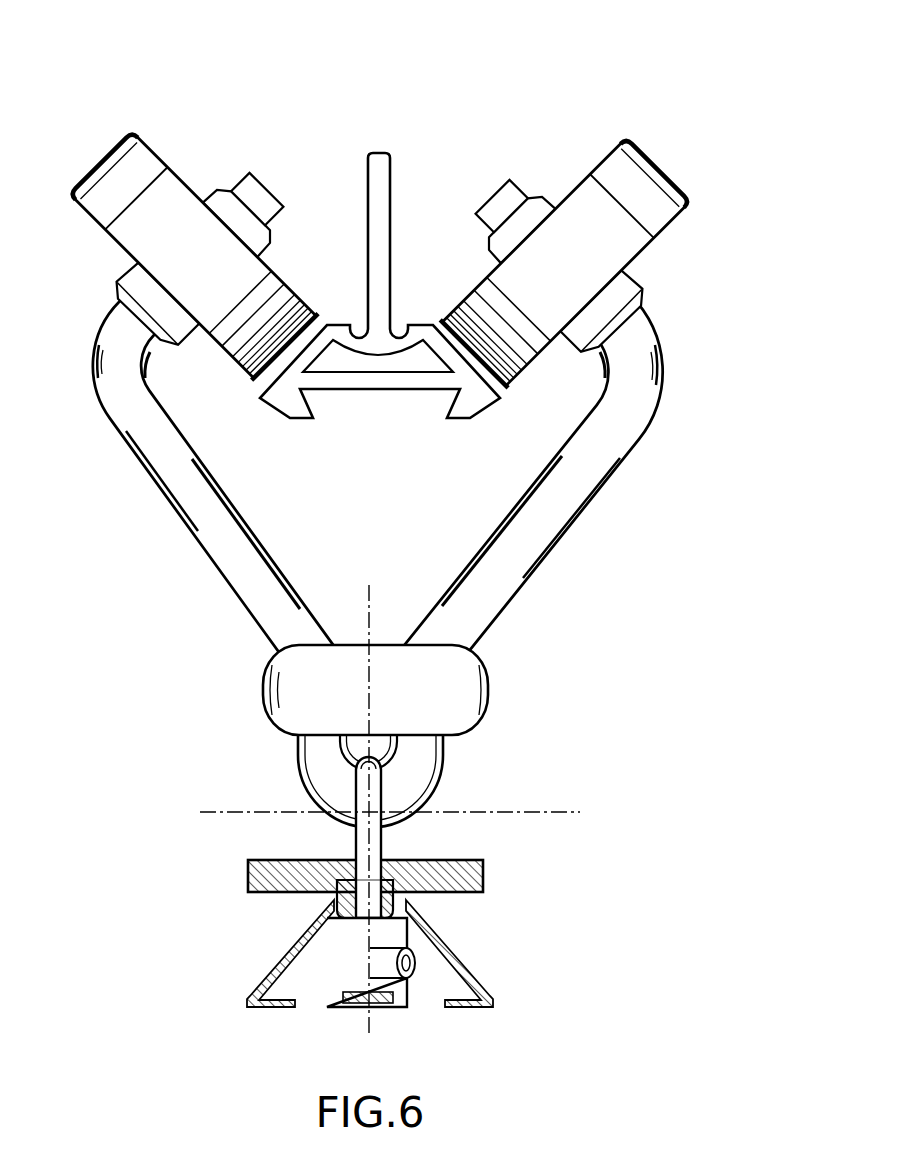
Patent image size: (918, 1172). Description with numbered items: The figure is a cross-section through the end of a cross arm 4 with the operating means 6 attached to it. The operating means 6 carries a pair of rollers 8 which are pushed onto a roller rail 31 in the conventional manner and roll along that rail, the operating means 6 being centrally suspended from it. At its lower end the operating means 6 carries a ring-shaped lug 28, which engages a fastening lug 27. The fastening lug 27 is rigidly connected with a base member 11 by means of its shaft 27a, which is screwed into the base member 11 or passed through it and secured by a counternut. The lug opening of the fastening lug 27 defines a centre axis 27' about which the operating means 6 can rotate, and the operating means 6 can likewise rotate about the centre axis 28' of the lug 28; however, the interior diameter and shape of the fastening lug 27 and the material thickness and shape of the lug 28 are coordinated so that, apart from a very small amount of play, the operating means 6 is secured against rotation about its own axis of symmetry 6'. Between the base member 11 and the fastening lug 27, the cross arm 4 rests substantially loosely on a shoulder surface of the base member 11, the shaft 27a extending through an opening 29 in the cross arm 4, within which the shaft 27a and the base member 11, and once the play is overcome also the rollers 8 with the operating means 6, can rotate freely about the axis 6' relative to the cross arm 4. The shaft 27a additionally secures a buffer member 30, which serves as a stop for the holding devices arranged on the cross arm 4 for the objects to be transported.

The cross arm 4 is at (430, 955).
The operating means 6 is at (422, 489).
The axis of symmetry 6' is at (425, 747).
The roller 8 is at (168, 198).
The base member 11 is at (347, 966).
The fastening lug 27 is at (491, 837).
The centre axis 27' is at (378, 767).
The shaft 27a is at (338, 905).
The lug 28 is at (461, 776).
The centre axis 28' is at (454, 697).
The opening 29 is at (395, 903).
The buffer member 30 is at (248, 863).
The roller rail 31 is at (383, 210).